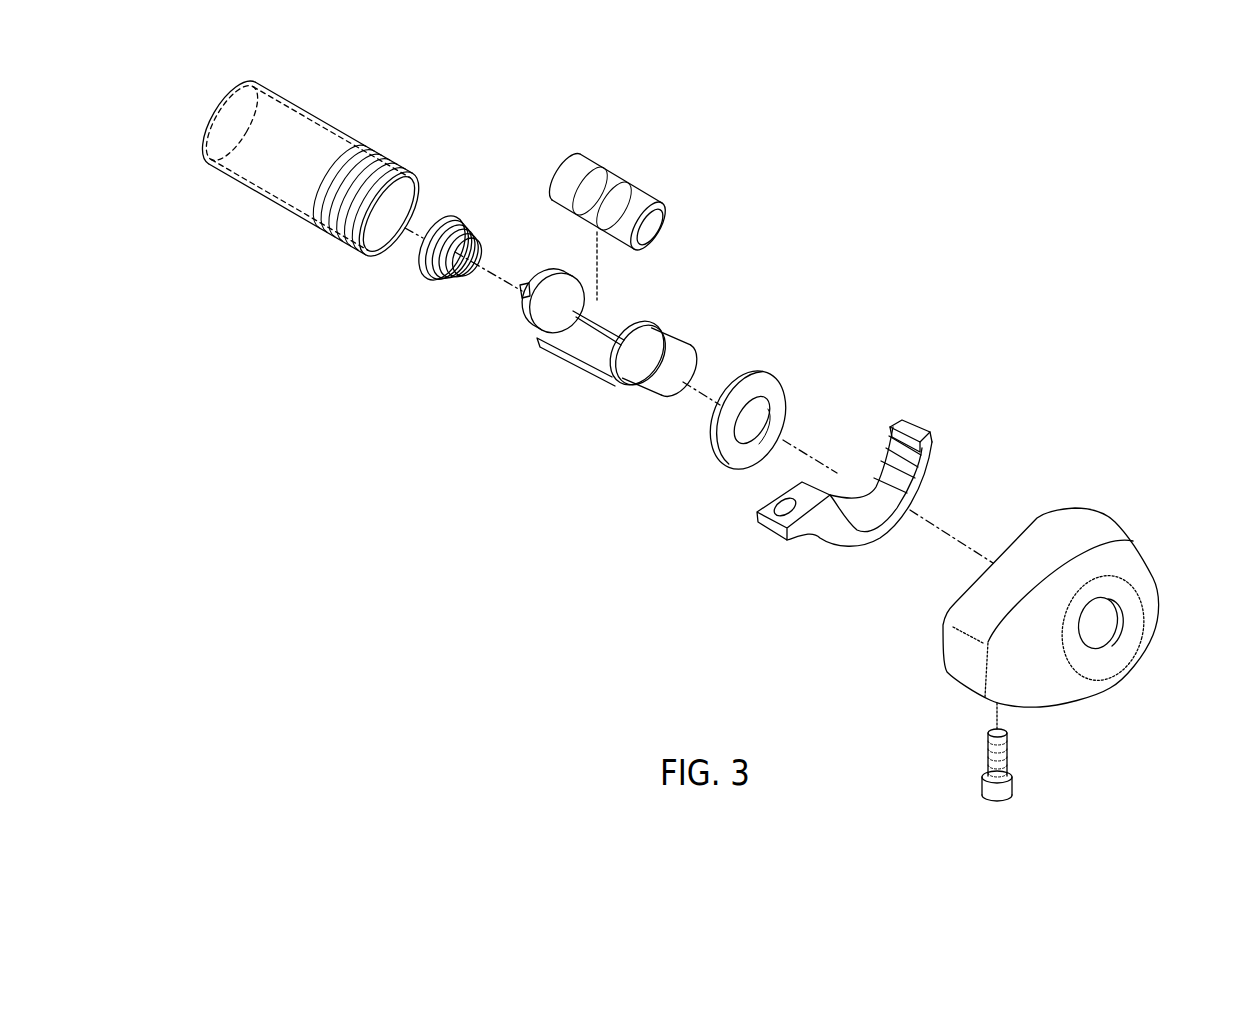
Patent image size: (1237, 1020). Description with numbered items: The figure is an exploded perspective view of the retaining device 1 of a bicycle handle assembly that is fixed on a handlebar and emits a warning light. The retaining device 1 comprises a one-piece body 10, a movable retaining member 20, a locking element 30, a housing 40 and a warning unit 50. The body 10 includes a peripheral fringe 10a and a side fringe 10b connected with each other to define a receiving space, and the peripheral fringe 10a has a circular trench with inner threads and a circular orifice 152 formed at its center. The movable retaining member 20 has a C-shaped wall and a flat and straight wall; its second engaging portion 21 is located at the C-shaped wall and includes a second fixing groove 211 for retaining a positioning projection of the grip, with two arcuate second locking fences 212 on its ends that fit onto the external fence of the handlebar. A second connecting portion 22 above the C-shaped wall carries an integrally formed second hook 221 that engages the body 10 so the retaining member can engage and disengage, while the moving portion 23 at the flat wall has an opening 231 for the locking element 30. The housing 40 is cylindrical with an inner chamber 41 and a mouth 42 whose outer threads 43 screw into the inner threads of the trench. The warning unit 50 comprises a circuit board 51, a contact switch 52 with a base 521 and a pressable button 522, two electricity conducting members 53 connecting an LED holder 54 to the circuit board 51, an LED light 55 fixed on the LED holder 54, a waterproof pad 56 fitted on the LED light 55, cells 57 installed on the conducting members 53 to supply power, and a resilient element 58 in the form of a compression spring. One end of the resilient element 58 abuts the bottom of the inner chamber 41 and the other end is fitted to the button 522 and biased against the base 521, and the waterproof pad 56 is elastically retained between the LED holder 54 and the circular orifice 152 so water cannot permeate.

The retaining device 1 is at (1110, 498).
The body 10 is at (1023, 598).
The peripheral fringe 10a is at (1048, 540).
The side fringe 10b is at (1048, 682).
The circular orifice 152 is at (1090, 620).
The movable retaining member 20 is at (849, 476).
The second engaging portion 21 is at (894, 489).
The second fixing groove 211 is at (867, 503).
The second locking fences 212 is at (885, 460).
The second connecting portion 22 is at (923, 389).
The second hook 221 is at (903, 418).
The moving portion 23 is at (759, 554).
The opening 231 is at (783, 507).
The locking element 30 is at (981, 748).
The housing 40 is at (351, 171).
The inner chamber 41 is at (290, 118).
The mouth 42 is at (403, 203).
The outer threads 43 is at (380, 167).
The warning unit 50 is at (608, 376).
The circuit board 51 is at (512, 296).
The contact switch 52 is at (557, 352).
The base 521 is at (527, 302).
The button 522 is at (523, 294).
The electricity conducting members 53 is at (570, 350).
The LED holder 54 is at (583, 330).
The LED light 55 is at (655, 385).
The waterproof pad 56 is at (718, 457).
The cells 57 is at (647, 190).
The resilient element 58 is at (427, 278).